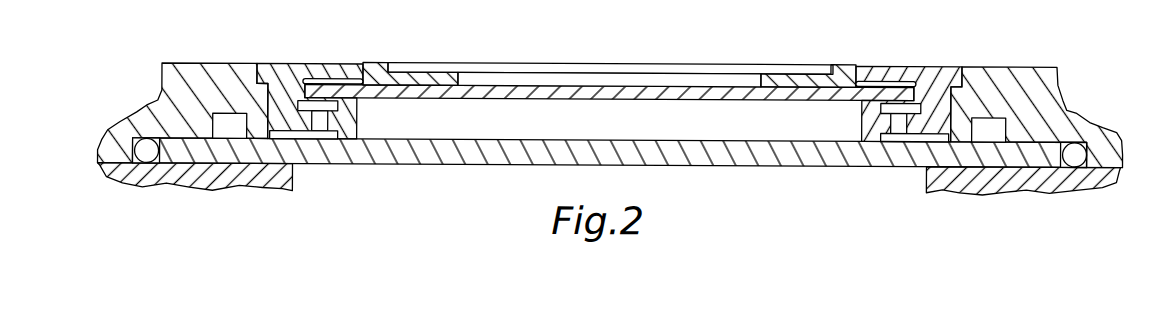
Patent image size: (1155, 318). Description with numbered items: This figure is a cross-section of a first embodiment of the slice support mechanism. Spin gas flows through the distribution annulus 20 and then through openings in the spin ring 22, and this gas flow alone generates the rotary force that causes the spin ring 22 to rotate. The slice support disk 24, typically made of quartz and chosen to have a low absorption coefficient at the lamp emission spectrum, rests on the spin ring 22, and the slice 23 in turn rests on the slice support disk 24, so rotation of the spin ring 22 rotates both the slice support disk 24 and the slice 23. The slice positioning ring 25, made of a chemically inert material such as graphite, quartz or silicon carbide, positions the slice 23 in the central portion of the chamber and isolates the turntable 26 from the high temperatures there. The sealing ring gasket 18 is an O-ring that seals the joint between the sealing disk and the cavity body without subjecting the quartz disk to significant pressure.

The sealing ring gasket 18 is at (1075, 160).
The distribution annulus 20 is at (238, 120).
The spin ring 22 is at (285, 97).
The slice 23 is at (707, 78).
The slice support disk 24 is at (335, 83).
The slice positioning ring 25 is at (845, 70).
The turntable 26 is at (935, 77).